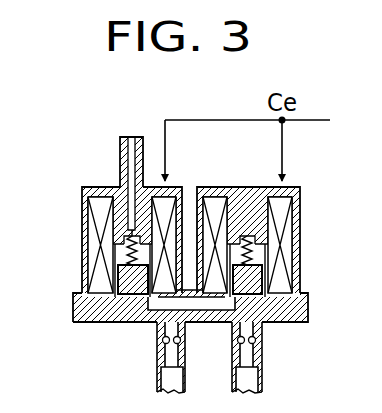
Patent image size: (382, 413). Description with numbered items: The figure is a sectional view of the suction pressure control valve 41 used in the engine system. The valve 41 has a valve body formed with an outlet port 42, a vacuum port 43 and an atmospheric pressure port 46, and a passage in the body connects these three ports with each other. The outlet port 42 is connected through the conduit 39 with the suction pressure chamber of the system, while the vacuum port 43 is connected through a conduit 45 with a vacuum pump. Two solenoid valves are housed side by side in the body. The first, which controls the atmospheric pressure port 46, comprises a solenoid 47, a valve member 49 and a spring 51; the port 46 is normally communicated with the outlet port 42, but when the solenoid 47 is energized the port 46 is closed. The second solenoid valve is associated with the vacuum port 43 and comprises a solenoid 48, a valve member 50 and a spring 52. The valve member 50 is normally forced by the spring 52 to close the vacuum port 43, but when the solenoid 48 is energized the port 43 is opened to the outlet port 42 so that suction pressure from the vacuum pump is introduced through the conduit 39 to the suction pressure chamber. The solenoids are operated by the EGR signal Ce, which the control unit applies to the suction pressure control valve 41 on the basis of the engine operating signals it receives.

The conduit 39 is at (158, 376).
The suction pressure control valve 41 is at (312, 188).
The outlet port 42 is at (160, 345).
The vacuum port 43 is at (260, 345).
The conduit 45 is at (262, 377).
The atmospheric pressure port 46 is at (132, 137).
The solenoid 47 is at (100, 207).
The solenoid 48 is at (285, 230).
The valve member 49 is at (117, 278).
The valve member 50 is at (262, 281).
The spring 51 is at (126, 252).
The spring 52 is at (250, 252).